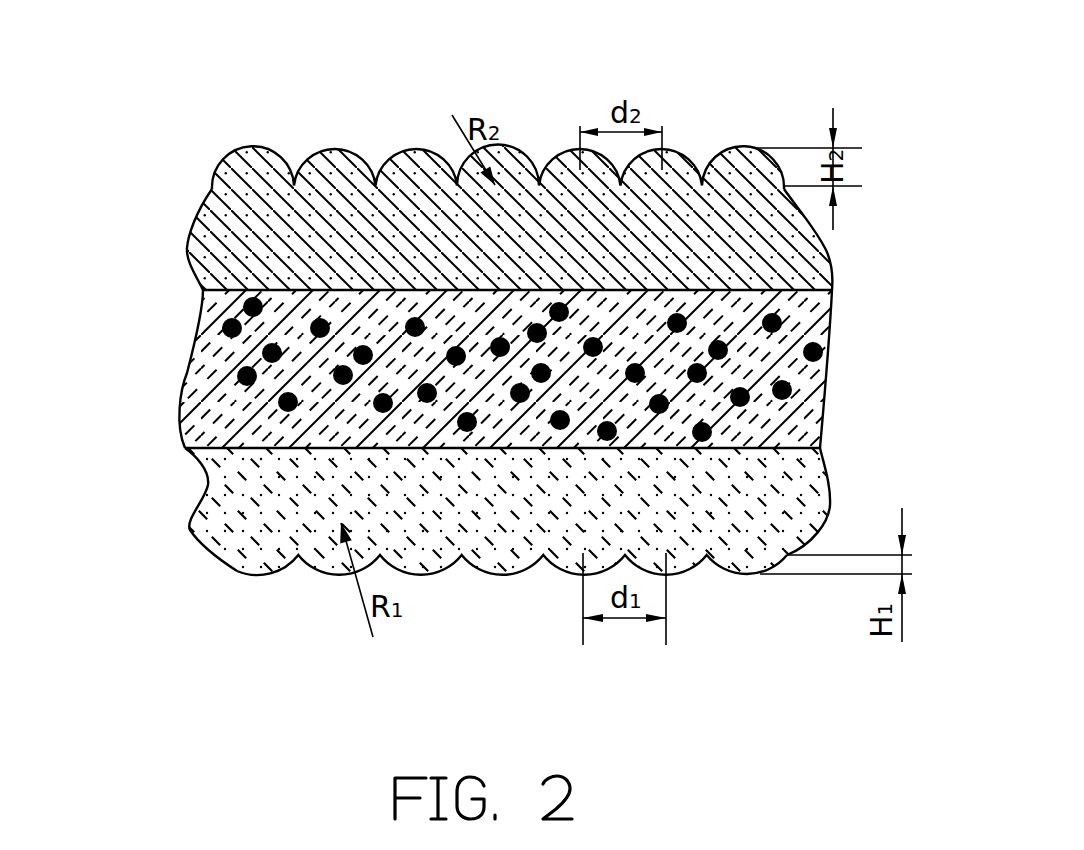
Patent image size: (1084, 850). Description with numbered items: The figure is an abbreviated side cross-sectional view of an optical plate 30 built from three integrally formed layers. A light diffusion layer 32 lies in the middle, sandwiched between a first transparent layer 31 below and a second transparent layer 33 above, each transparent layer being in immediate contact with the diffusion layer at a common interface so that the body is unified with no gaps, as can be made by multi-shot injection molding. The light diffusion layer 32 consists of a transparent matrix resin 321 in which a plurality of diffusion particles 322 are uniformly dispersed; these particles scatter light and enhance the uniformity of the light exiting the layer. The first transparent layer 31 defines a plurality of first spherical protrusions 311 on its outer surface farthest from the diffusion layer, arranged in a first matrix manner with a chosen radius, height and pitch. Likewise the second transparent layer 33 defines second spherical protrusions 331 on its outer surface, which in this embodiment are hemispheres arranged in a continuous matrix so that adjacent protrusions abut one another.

The optical plate 30 is at (454, 311).
The first transparent layer 31 is at (484, 532).
The first spherical protrusions 311 is at (254, 571).
The light diffusion layer 32 is at (454, 370).
The transparent matrix resin 321 is at (230, 400).
The diffusion particles 322 is at (224, 323).
The second transparent layer 33 is at (484, 200).
The second spherical protrusions 331 is at (250, 165).